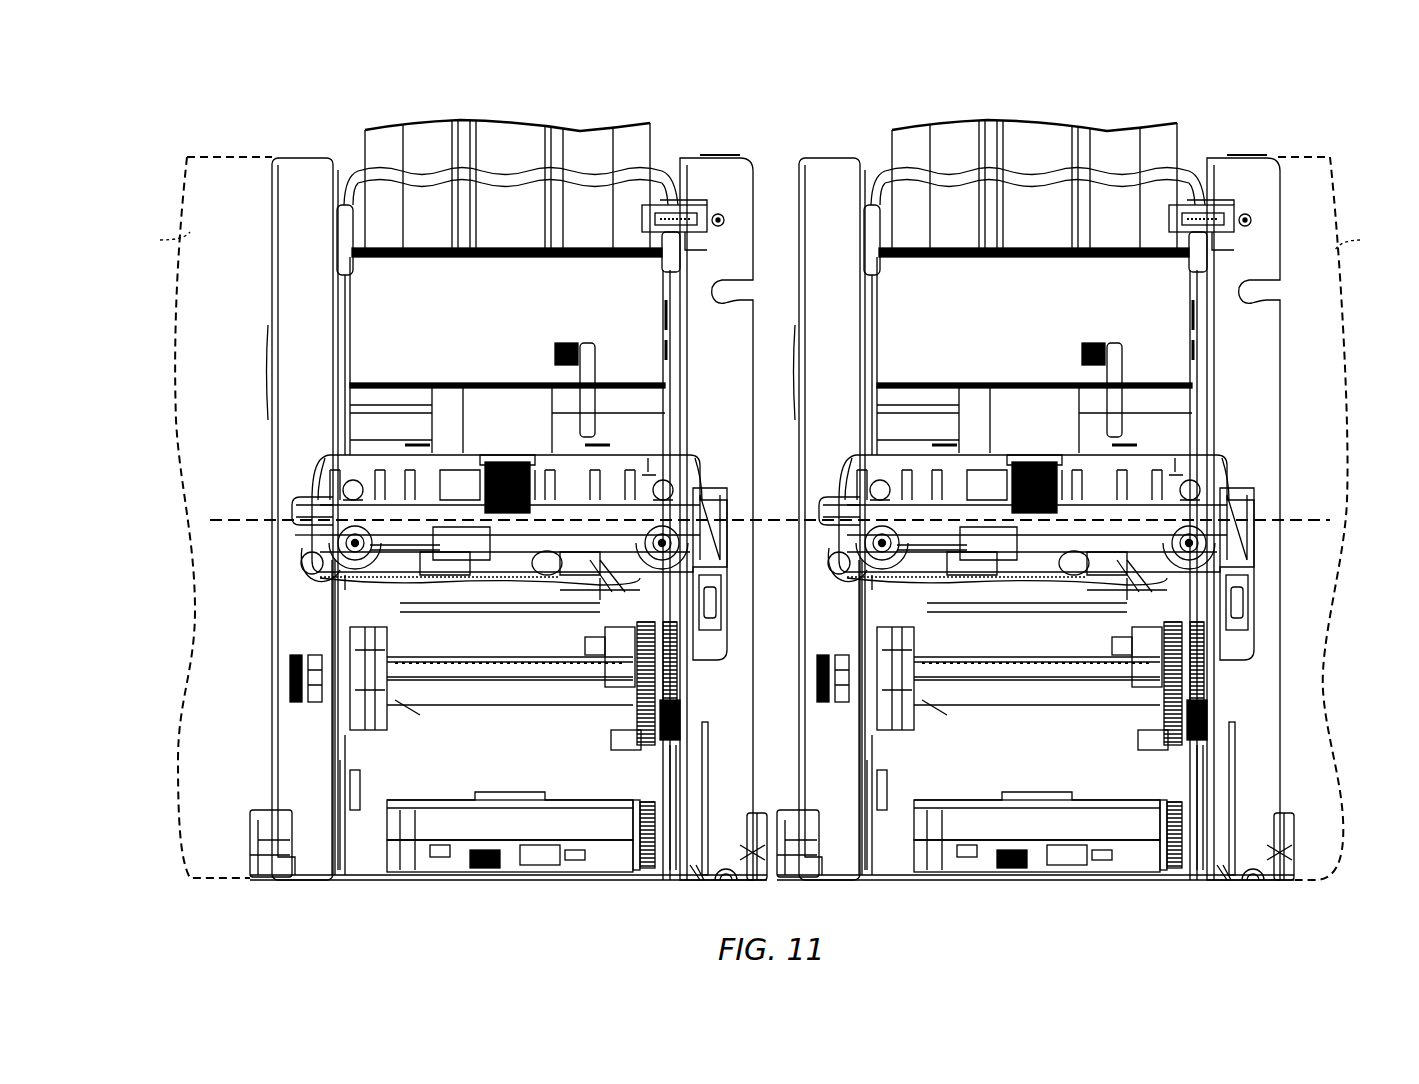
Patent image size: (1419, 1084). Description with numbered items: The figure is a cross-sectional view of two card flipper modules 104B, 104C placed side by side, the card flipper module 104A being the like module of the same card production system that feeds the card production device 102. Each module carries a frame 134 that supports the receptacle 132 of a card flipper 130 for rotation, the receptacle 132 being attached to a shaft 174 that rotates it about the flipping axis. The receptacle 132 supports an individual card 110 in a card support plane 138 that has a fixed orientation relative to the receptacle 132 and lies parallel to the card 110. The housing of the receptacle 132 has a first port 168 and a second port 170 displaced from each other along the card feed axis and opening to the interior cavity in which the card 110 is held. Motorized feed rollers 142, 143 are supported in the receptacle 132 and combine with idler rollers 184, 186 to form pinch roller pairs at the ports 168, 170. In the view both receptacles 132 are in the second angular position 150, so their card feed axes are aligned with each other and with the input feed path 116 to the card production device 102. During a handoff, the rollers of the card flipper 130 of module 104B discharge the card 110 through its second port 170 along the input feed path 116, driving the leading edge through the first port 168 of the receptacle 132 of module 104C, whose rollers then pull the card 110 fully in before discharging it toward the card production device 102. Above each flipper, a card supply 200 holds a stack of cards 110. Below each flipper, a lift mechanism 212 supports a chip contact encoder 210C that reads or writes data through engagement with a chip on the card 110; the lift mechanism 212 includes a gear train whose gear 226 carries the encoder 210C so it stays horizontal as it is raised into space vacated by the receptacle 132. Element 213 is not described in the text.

The card production device 102 is at (1385, 238).
The card flipper module 104A is at (134, 238).
The card flipper module 104B is at (305, 120).
The card flipper module 104C is at (1190, 102).
The card 110 is at (763, 400).
The input feed path 116 is at (1320, 543).
The card flipper 130 is at (305, 448).
The receptacle 132 is at (362, 460).
The frame 134 is at (283, 198).
The card support plane 138 is at (287, 541).
The feed roller 142 is at (340, 512).
The feed roller 143 is at (650, 470).
The second angular position 150 is at (300, 476).
The first port 168 is at (338, 567).
The second port 170 is at (706, 470).
The shaft 174 is at (390, 578).
The idler roller 184 is at (330, 583).
The idler roller 186 is at (922, 729).
The card supply 200 is at (485, 130).
The chip contact encoder 210C is at (400, 830).
The lift mechanism 212 is at (600, 748).
The slot 213 is at (400, 777).
The gear 226 is at (650, 800).